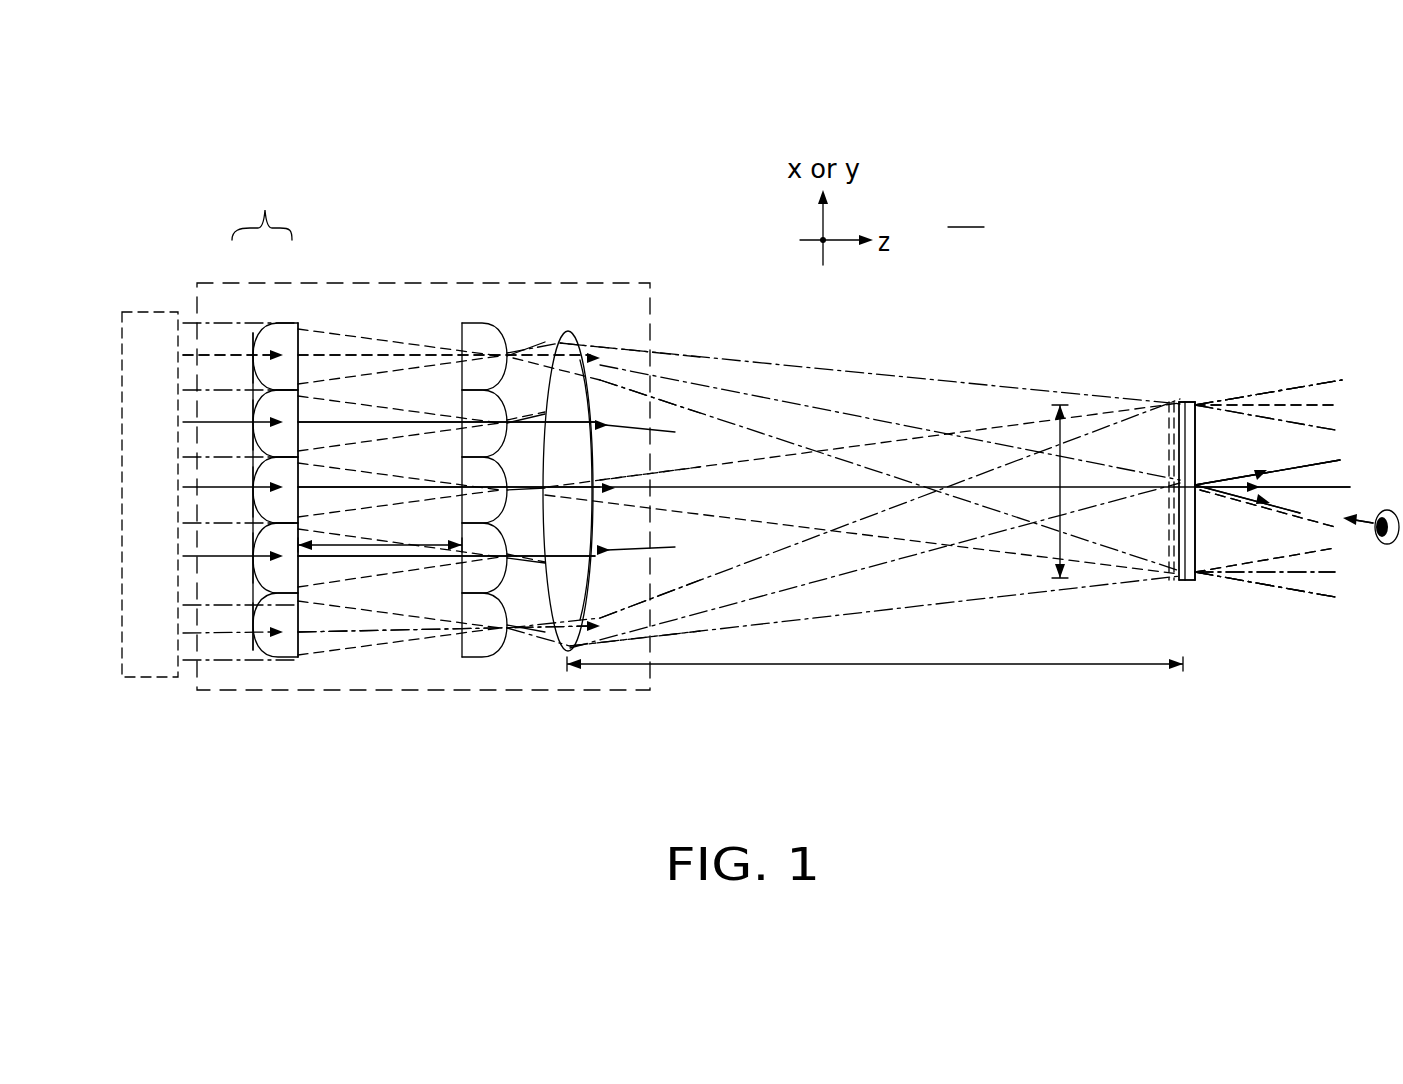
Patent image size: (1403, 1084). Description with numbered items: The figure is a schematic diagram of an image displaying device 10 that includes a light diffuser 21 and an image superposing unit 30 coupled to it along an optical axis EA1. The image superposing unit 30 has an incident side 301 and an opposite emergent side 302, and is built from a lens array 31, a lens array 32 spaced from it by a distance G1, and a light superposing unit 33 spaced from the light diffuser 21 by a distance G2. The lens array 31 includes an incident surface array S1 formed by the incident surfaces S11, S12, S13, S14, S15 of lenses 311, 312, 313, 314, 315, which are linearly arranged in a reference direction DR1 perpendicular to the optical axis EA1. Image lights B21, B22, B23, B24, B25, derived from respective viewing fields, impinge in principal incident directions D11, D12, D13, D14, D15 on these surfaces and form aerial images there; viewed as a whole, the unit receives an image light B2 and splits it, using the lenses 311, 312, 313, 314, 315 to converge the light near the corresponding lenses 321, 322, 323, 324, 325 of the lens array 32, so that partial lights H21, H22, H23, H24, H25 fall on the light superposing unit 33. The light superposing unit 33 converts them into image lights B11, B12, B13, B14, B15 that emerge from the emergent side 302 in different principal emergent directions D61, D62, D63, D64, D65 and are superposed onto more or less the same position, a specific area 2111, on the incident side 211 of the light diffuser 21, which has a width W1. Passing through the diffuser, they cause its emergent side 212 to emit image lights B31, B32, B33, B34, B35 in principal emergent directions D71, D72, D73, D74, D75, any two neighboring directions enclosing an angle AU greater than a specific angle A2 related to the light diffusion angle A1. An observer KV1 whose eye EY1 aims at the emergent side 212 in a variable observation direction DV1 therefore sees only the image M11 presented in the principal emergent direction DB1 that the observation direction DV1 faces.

The image displaying device 10 is at (966, 209).
The image light B2 is at (148, 312).
The image light B21 is at (206, 339).
The image light B22 is at (206, 411).
The image light B23 is at (206, 478).
The image light B24 is at (206, 546).
The image light B25 is at (206, 624).
The principal incident direction D11 is at (364, 367).
The principal incident direction D12 is at (402, 441).
The principal incident direction D13 is at (739, 505).
The principal incident direction D14 is at (402, 571).
The principal incident direction D15 is at (364, 646).
The reference direction DR1 is at (205, 258).
The incident surface array S1 is at (265, 210).
The incident surface S11 is at (257, 343).
The incident surface S12 is at (255, 420).
The incident surface S13 is at (255, 488).
The incident surface S14 is at (255, 555).
The incident surface S15 is at (255, 660).
The image superposing unit 30 is at (370, 283).
The lens array 31 is at (316, 501).
The lens 311 is at (282, 340).
The lens 312 is at (283, 415).
The lens 313 is at (287, 483).
The lens 314 is at (283, 572).
The lens 315 is at (296, 657).
The incident side 301 is at (255, 683).
The emergent side 302 is at (597, 388).
The lens array 32 is at (454, 494).
The lens 321 is at (480, 333).
The lens 322 is at (468, 413).
The lens 323 is at (468, 480).
The lens 324 is at (462, 568).
The lens 325 is at (466, 657).
The light superposing unit 33 is at (562, 335).
The distance G1 is at (380, 533).
The distance G2 is at (875, 651).
The partial light H21 is at (533, 345).
The partial light H22 is at (537, 417).
The partial light H23 is at (538, 483).
The partial light H24 is at (537, 562).
The partial light H25 is at (540, 628).
The principal emergent direction D61 is at (593, 350).
The principal emergent direction D62 is at (466, 404).
The principal emergent direction D63 is at (612, 480).
The principal emergent direction D64 is at (612, 553).
The principal emergent direction D65 is at (590, 640).
The image light B11 is at (628, 365).
The image light B12 is at (640, 393).
The image light B13 is at (640, 468).
The image light B14 is at (630, 545).
The image light B15 is at (636, 620).
The width W1 is at (1050, 442).
The light diffuser 21 is at (1146, 469).
The incident side 211 is at (1178, 433).
The emergent side 212 is at (1197, 427).
The specific area 2111 is at (1160, 520).
The light diffusion angle A1 is at (1191, 370).
The specific angle A2 is at (1227, 660).
The image M11 is at (1208, 460).
The principal emergent direction DB1 is at (1316, 290).
The principal emergent direction D74 is at (1295, 478).
The image light B34 is at (1287, 473).
The angle AU is at (1318, 365).
The principal emergent direction D75 is at (1267, 465).
The image light B35 is at (1287, 470).
The optical axis EA1 is at (1293, 486).
The image light B31 is at (1252, 492).
The image light B33 is at (1283, 497).
The principal emergent direction D71 is at (1265, 507).
The principal emergent direction D72 is at (1283, 497).
The principal emergent direction D73 is at (1237, 538).
The image light B32 is at (1310, 500).
The observation direction DV1 is at (1363, 530).
The eye EY1 is at (1384, 545).
The observer KV1 is at (1360, 740).